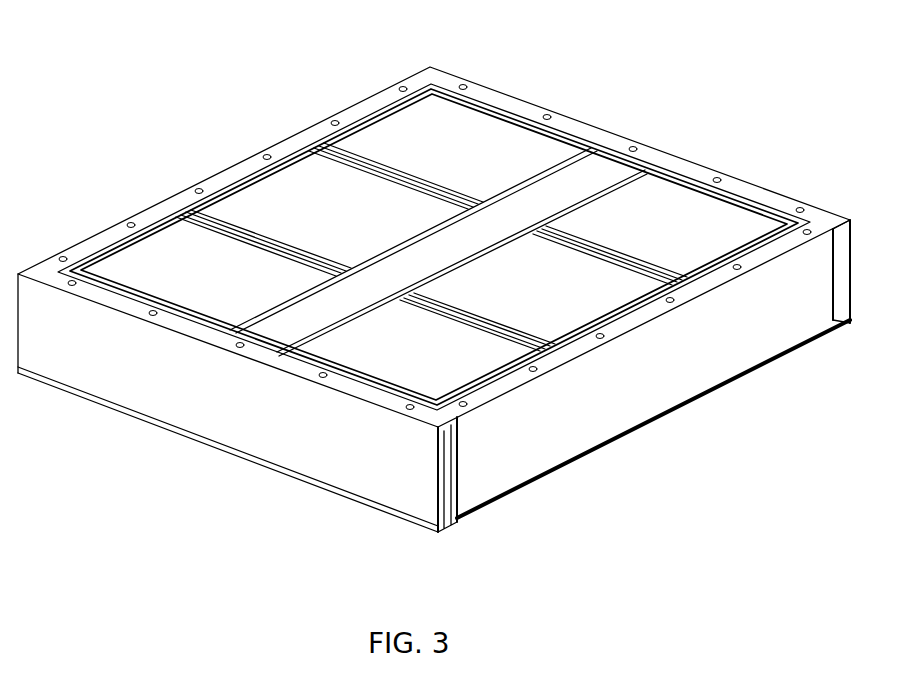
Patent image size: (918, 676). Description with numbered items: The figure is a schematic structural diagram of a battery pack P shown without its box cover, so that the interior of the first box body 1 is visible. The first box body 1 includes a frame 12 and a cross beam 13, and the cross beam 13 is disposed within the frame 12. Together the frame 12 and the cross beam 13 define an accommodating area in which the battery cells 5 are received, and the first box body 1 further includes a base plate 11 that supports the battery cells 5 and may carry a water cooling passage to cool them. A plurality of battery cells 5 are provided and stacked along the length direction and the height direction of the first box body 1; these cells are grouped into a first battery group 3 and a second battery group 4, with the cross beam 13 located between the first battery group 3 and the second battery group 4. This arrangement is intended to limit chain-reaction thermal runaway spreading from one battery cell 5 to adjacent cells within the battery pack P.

The first box body 1 is at (65, 493).
The first battery group 3 is at (280, 204).
The second battery group 4 is at (590, 300).
The battery cell 5 is at (473, 127).
The base plate 11 is at (252, 461).
The frame 12 is at (382, 400).
The cross beam 13 is at (272, 328).
The battery pack P is at (617, 91).